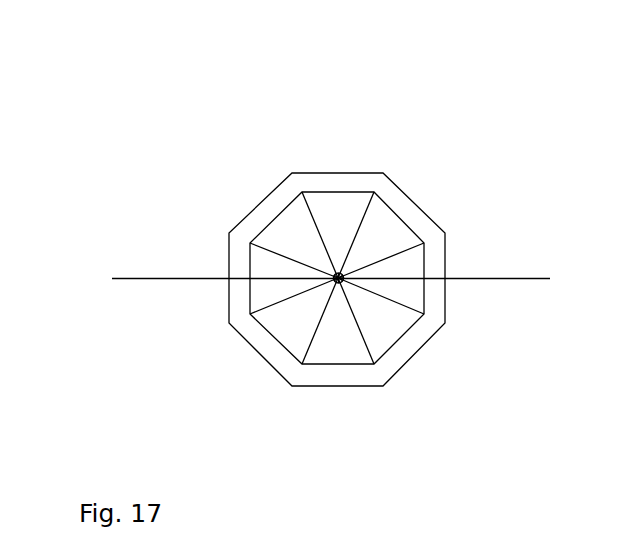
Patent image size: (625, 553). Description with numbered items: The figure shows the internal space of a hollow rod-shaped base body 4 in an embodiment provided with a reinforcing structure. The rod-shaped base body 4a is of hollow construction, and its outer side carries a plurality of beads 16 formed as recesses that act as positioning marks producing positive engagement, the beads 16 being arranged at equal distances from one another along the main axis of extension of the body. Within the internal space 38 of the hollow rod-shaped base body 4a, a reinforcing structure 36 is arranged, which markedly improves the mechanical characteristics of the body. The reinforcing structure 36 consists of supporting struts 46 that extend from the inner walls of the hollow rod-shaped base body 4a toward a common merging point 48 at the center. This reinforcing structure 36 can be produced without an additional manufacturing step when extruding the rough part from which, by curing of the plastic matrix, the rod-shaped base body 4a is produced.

The rod-shaped base body 4 is at (382, 111).
The rod-shaped base body 4a is at (420, 207).
The bead 16 is at (214, 298).
The reinforcing structure 36 is at (273, 253).
The internal space 38 is at (338, 192).
The supporting strut 46 is at (393, 303).
The merging point 48 is at (338, 283).